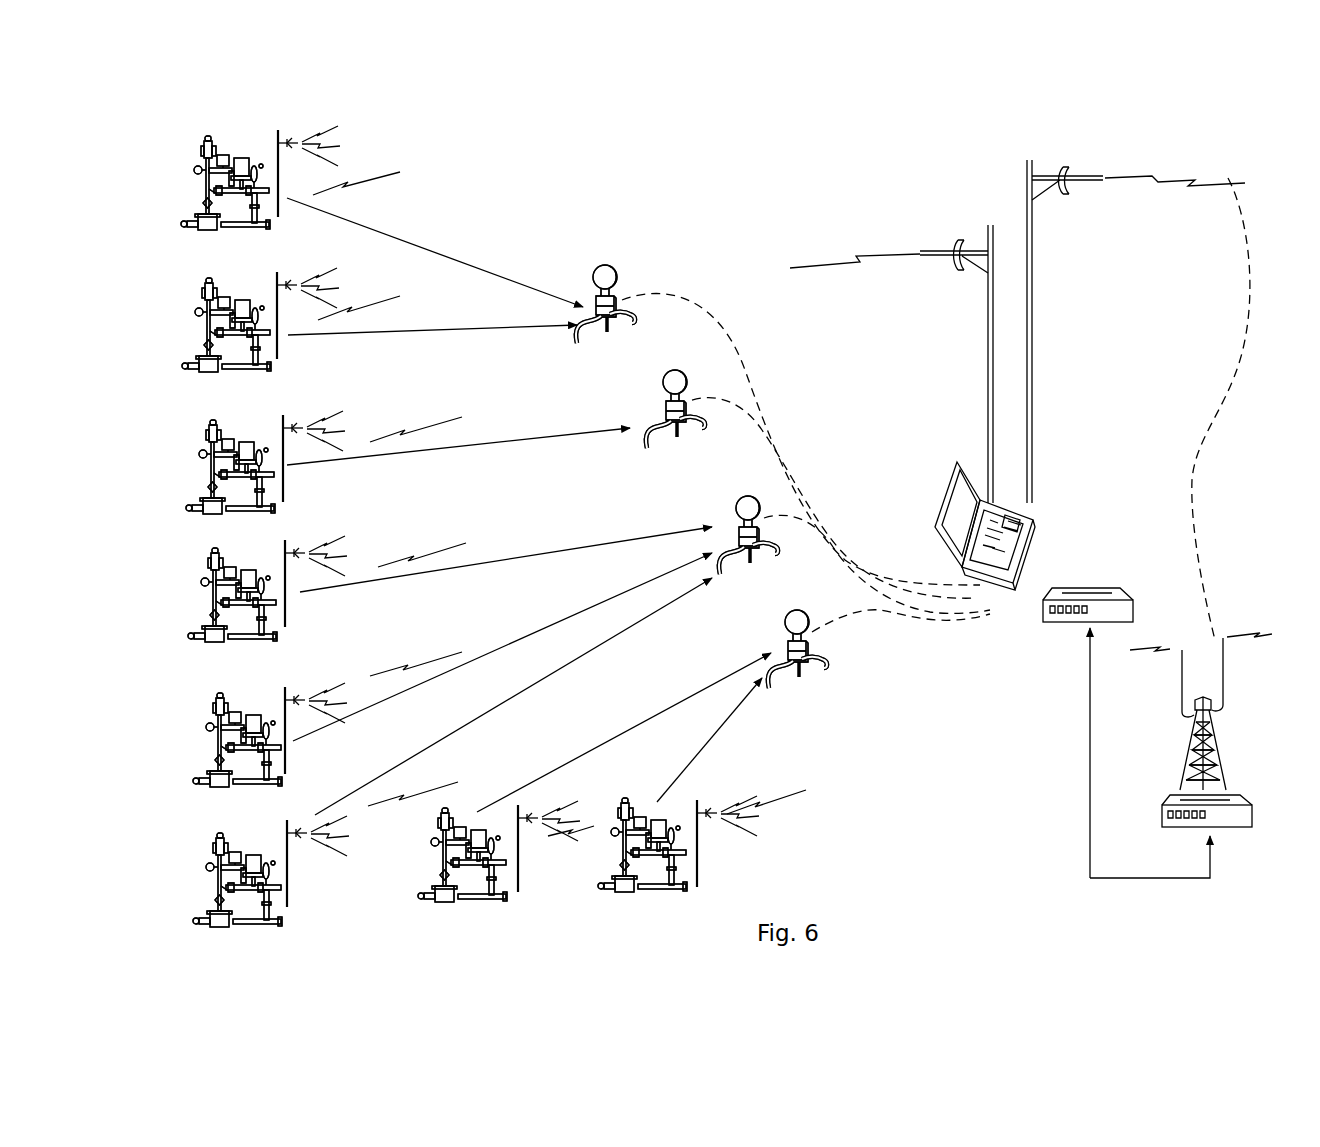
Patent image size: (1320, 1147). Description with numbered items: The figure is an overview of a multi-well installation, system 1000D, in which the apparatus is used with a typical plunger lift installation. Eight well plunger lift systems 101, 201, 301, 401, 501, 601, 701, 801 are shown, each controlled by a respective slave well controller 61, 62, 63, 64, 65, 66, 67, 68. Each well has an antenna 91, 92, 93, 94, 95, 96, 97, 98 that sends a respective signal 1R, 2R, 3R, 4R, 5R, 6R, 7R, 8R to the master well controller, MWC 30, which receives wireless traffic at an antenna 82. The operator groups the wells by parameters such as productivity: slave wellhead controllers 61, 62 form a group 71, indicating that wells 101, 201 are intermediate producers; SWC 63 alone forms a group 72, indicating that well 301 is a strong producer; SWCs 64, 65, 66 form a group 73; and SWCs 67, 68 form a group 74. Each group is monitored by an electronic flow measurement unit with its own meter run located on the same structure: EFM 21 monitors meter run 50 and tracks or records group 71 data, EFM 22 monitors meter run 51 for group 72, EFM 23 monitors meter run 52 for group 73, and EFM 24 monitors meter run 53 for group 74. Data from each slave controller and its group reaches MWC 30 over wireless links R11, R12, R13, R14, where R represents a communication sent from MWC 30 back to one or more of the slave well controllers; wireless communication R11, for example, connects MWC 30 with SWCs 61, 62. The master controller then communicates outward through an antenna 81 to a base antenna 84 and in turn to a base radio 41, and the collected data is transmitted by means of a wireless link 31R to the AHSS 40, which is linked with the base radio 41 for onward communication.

The system 1000D is at (722, 190).
The slave well controller 61 is at (228, 160).
The slave well controller 62 is at (228, 302).
The slave well controller 63 is at (232, 444).
The slave well controller 64 is at (234, 572).
The slave well controller 65 is at (238, 716).
The slave well controller 66 is at (238, 856).
The slave well controller 67 is at (460, 832).
The slave well controller 68 is at (640, 812).
The well plunger lift system 101 is at (242, 148).
The well plunger lift system 201 is at (242, 288).
The well plunger lift system 301 is at (247, 430).
The well plunger lift system 401 is at (249, 566).
The well plunger lift system 501 is at (254, 692).
The well plunger lift system 601 is at (255, 842).
The well plunger lift system 701 is at (447, 795).
The well plunger lift system 801 is at (617, 786).
The antenna 91 is at (279, 152).
The antenna 92 is at (278, 294).
The antenna 93 is at (284, 460).
The antenna 94 is at (286, 590).
The antenna 95 is at (286, 728).
The antenna 96 is at (288, 858).
The antenna 97 is at (519, 830).
The antenna 98 is at (698, 830).
The signal 1R is at (372, 178).
The signal 2R is at (373, 310).
The signal 3R is at (383, 432).
The signal 4R is at (392, 558).
The signal 5R is at (388, 668).
The signal 6R is at (384, 798).
The signal 7R is at (587, 838).
The signal 8R is at (772, 814).
The group 71 is at (465, 330).
The group 72 is at (545, 430).
The group 73 is at (615, 600).
The group 74 is at (693, 757).
The EFM 21 is at (610, 265).
The EFM 22 is at (668, 375).
The EFM 23 is at (745, 497).
The EFM 24 is at (795, 610).
The meter run 50 is at (612, 318).
The meter run 51 is at (678, 425).
The meter run 52 is at (750, 556).
The meter run 53 is at (800, 675).
The wireless communication R11 is at (750, 405).
The wireless link R12 is at (785, 462).
The wireless link R13 is at (840, 552).
The wireless link R14 is at (890, 616).
The communication R is at (810, 265).
The antenna 81 is at (1035, 337).
The antenna 82 is at (988, 318).
The wireless link 31R is at (1205, 181).
The MWC 30 is at (942, 502).
The AHSS 40 is at (1080, 587).
The base radio 41 is at (1160, 810).
The base antenna 84 is at (1213, 730).